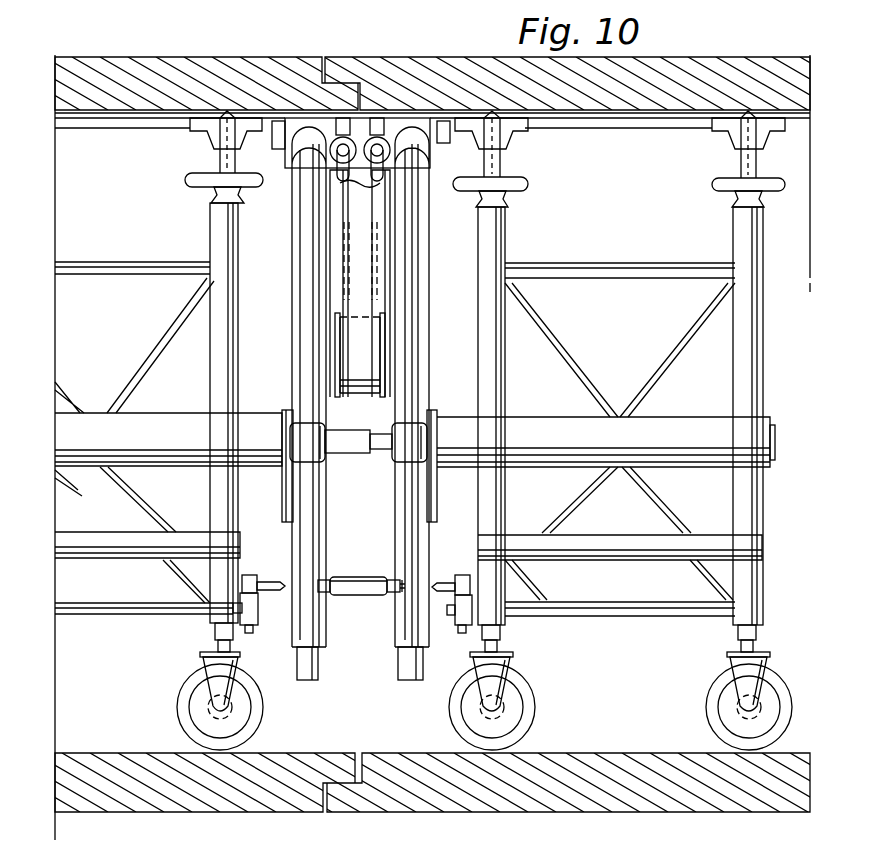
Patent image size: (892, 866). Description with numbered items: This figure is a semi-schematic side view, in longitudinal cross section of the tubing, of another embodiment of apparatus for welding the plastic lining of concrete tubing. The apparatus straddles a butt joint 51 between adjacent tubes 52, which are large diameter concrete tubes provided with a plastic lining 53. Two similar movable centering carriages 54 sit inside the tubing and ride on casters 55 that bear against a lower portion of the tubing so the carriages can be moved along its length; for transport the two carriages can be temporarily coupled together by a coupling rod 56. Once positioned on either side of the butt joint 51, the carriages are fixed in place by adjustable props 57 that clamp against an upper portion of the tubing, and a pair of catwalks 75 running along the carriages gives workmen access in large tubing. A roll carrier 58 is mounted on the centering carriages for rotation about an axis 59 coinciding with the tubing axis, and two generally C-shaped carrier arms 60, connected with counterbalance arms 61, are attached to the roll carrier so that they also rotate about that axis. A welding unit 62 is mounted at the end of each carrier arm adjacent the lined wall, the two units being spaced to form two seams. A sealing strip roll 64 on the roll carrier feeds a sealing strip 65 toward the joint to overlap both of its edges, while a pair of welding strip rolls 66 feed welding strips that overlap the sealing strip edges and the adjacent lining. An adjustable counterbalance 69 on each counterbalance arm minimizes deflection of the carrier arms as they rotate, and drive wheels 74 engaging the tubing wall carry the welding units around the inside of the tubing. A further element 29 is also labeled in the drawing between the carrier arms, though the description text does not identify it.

The connecting rod 29 is at (349, 455).
The butt joint 51 is at (356, 117).
The tubes 52 is at (246, 812).
The plastic lining 53 is at (632, 116).
The centering carriages 54 is at (137, 627).
The casters 55 is at (262, 717).
The coupling rod 56 is at (354, 597).
The adjustable props 57 is at (207, 130).
The roll carrier 58 is at (272, 506).
The axis 59 is at (186, 402).
The carrier arms 60 is at (302, 347).
The counterbalance arms 61 is at (401, 546).
The welding unit 62 is at (334, 140).
The sealing strip roll 64 is at (386, 345).
The sealing strip 65 is at (360, 300).
The welding strip rolls 66 is at (387, 248).
The adjustable counterbalance 69 is at (400, 657).
The drive wheels 74 is at (448, 140).
The catwalks 75 is at (118, 545).